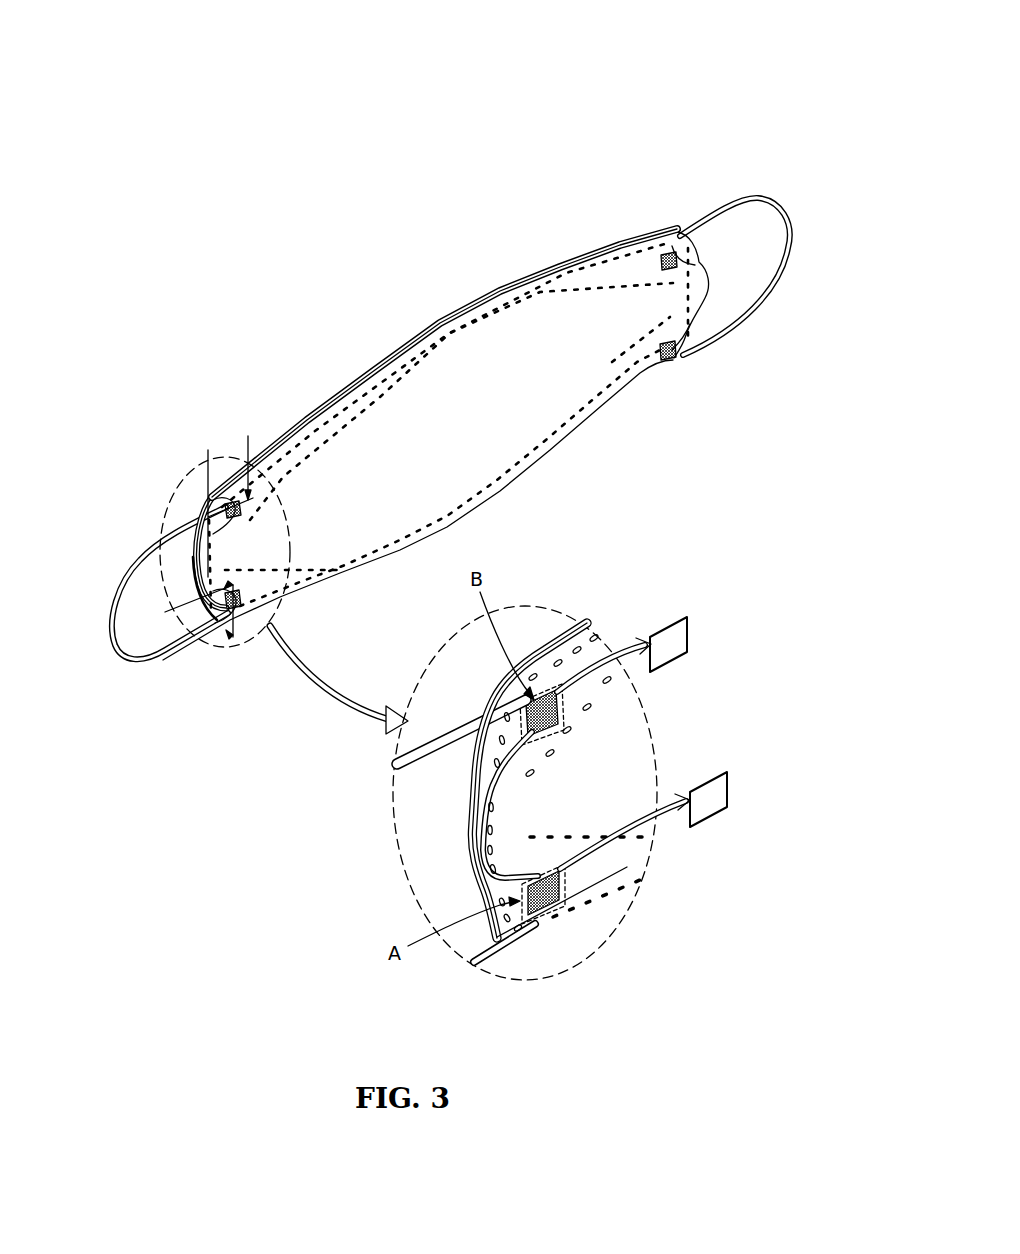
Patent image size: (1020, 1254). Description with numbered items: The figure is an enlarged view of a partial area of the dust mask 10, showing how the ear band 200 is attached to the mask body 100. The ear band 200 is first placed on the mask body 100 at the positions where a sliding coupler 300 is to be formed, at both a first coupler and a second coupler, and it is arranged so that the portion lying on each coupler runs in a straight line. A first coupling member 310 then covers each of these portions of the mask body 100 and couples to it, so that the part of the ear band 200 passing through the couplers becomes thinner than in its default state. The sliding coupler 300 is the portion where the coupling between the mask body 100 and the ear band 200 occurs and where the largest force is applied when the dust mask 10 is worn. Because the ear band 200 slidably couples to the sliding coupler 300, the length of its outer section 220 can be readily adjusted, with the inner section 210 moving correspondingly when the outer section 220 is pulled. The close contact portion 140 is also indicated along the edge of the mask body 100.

The dust mask 10 is at (619, 108).
The mask body 100 is at (507, 330).
The close contact portion 140 is at (368, 392).
The ear band 200 is at (752, 188).
The inner section 210 is at (466, 846).
The outer section 220 is at (450, 735).
The sliding coupler 300 is at (549, 692).
The first coupling member 310 is at (688, 633).